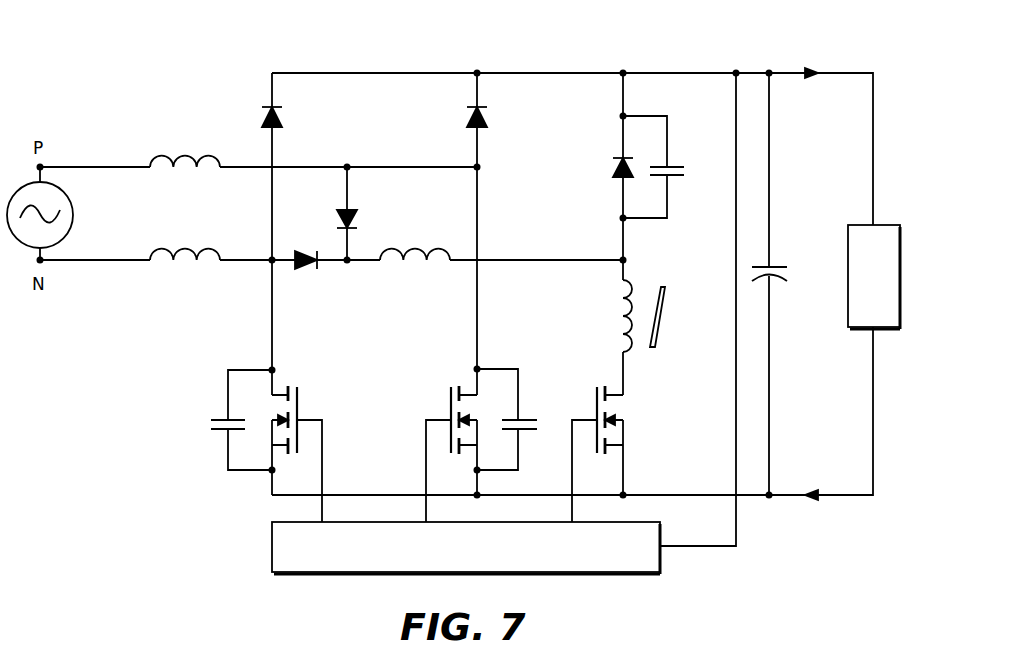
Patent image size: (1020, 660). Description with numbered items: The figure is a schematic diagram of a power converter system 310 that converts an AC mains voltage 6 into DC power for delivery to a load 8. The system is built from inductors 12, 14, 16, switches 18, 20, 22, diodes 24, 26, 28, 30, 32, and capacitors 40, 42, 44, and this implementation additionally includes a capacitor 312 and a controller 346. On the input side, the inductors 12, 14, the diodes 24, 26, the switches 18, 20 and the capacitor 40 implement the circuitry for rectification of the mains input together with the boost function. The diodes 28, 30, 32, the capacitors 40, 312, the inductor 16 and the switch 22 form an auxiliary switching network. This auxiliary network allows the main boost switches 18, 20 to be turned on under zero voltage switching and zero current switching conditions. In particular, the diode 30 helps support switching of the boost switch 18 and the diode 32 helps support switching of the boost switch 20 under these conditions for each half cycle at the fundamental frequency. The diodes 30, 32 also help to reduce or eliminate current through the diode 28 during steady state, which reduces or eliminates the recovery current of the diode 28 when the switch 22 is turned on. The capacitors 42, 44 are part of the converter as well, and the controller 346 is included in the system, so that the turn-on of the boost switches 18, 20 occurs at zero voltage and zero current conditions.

The power converter system 310 is at (195, 48).
The AC mains voltage 6 is at (25, 243).
The inductor 12 is at (176, 146).
The inductor 14 is at (176, 240).
The inductor 16 is at (426, 243).
The diode 24 is at (289, 114).
The diode 26 is at (494, 114).
The diode 28 is at (616, 182).
The diode 30 is at (302, 268).
The diode 32 is at (341, 208).
The capacitor 312 is at (672, 165).
The capacitor 40 is at (798, 273).
The load 8 is at (846, 238).
The switch 18 is at (313, 410).
The switch 20 is at (448, 405).
The switch 22 is at (627, 428).
The capacitor 42 is at (223, 415).
The capacitor 44 is at (526, 418).
The controller 346 is at (628, 575).